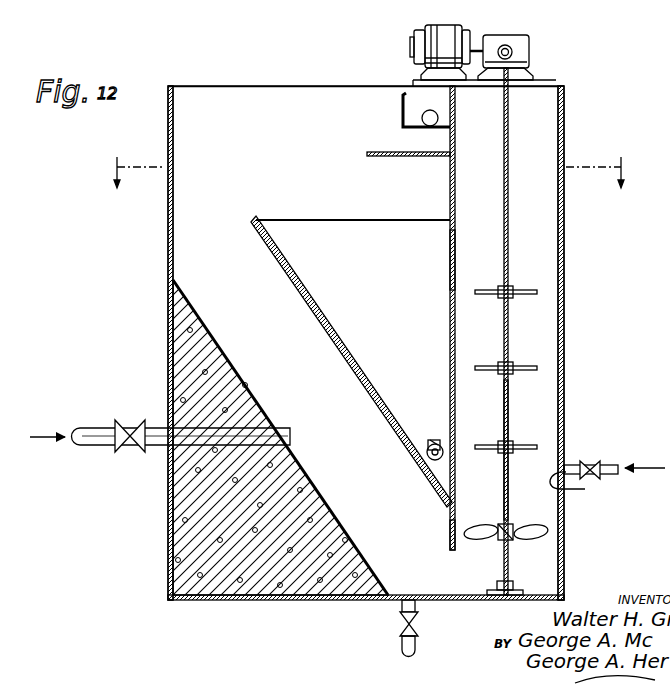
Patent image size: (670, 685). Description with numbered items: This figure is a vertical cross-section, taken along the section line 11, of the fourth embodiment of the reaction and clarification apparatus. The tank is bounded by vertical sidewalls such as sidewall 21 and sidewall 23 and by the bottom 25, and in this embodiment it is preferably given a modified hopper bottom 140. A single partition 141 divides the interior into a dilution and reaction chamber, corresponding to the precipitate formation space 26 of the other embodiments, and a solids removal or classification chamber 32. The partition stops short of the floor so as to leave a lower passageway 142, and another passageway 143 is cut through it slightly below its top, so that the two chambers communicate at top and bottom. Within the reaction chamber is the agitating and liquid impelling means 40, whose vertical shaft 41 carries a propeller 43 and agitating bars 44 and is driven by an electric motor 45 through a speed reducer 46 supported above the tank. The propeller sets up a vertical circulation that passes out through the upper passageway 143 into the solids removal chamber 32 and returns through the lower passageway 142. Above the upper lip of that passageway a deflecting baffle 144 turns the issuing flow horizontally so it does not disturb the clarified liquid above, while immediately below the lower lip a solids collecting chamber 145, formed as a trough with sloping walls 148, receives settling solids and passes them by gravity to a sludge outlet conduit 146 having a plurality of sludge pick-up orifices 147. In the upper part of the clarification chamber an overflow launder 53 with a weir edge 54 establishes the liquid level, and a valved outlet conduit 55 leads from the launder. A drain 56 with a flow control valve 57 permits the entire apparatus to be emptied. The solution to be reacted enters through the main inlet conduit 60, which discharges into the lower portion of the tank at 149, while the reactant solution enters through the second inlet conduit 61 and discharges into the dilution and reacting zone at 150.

The section line 11 is at (371, 172).
The vertical sidewall 21 is at (565, 224).
The vertical sidewall 23 is at (168, 308).
The bottom 25 is at (200, 600).
The precipitate formation space 26 is at (548, 343).
The solids removal chamber 32 is at (203, 100).
The agitating and liquid impelling means 40 is at (510, 113).
The shaft 41 is at (510, 414).
The propeller 43 is at (547, 530).
The agitating bars 44 is at (538, 292).
The electric motor 45 is at (439, 34).
The speed reducer 46 is at (506, 36).
The launder 53 is at (415, 97).
The weir edge 54 is at (403, 97).
The valved outlet conduit 55 is at (421, 118).
The drain 56 is at (401, 607).
The flow control valve 57 is at (401, 628).
The inlet conduit 60 is at (163, 428).
The second inlet conduit 61 is at (575, 462).
The modified hopper bottom 140 is at (300, 468).
The partition 141 is at (450, 254).
The passageway 142 is at (453, 570).
The passageway 143 is at (449, 180).
The deflecting baffle 144 is at (366, 155).
The solids collecting chamber 145 is at (346, 229).
The sludge outlet conduit 146 is at (433, 443).
The sludge pick-up orifices 147 is at (427, 463).
The sloping walls 148 is at (340, 360).
The inlet discharge 149 is at (286, 437).
The inlet discharge 150 is at (582, 487).